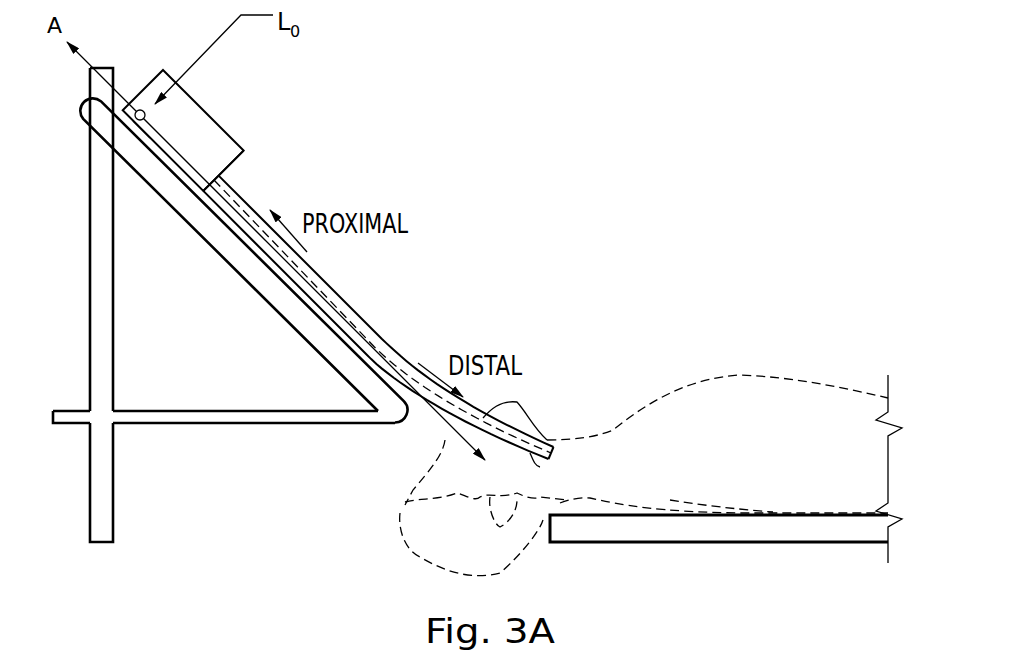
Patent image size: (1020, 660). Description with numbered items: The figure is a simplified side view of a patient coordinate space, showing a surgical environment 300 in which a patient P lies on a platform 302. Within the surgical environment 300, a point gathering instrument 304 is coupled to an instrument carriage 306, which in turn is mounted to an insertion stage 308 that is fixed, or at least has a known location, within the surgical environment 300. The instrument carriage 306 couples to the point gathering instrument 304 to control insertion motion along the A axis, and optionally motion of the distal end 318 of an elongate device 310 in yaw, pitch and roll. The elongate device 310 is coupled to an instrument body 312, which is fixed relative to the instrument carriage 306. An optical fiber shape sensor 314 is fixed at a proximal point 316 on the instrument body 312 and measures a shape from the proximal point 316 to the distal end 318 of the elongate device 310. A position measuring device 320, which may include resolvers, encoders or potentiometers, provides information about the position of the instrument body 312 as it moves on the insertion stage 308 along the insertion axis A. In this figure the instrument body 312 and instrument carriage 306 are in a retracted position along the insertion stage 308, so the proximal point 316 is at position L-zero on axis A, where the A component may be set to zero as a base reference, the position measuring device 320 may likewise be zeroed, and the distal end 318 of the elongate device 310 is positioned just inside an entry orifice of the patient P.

The surgical environment 300 is at (692, 150).
The platform 302 is at (722, 543).
The point gathering instrument 304 is at (190, 110).
The instrument carriage 306 is at (205, 168).
The insertion stage 308 is at (235, 273).
The elongate device 310 is at (376, 342).
The instrument body 312 is at (257, 124).
The optical fiber shape sensor 314 is at (357, 283).
The proximal point 316 is at (138, 110).
The distal end 318 is at (545, 465).
The position measuring device 320 is at (142, 131).
The patient P is at (765, 371).